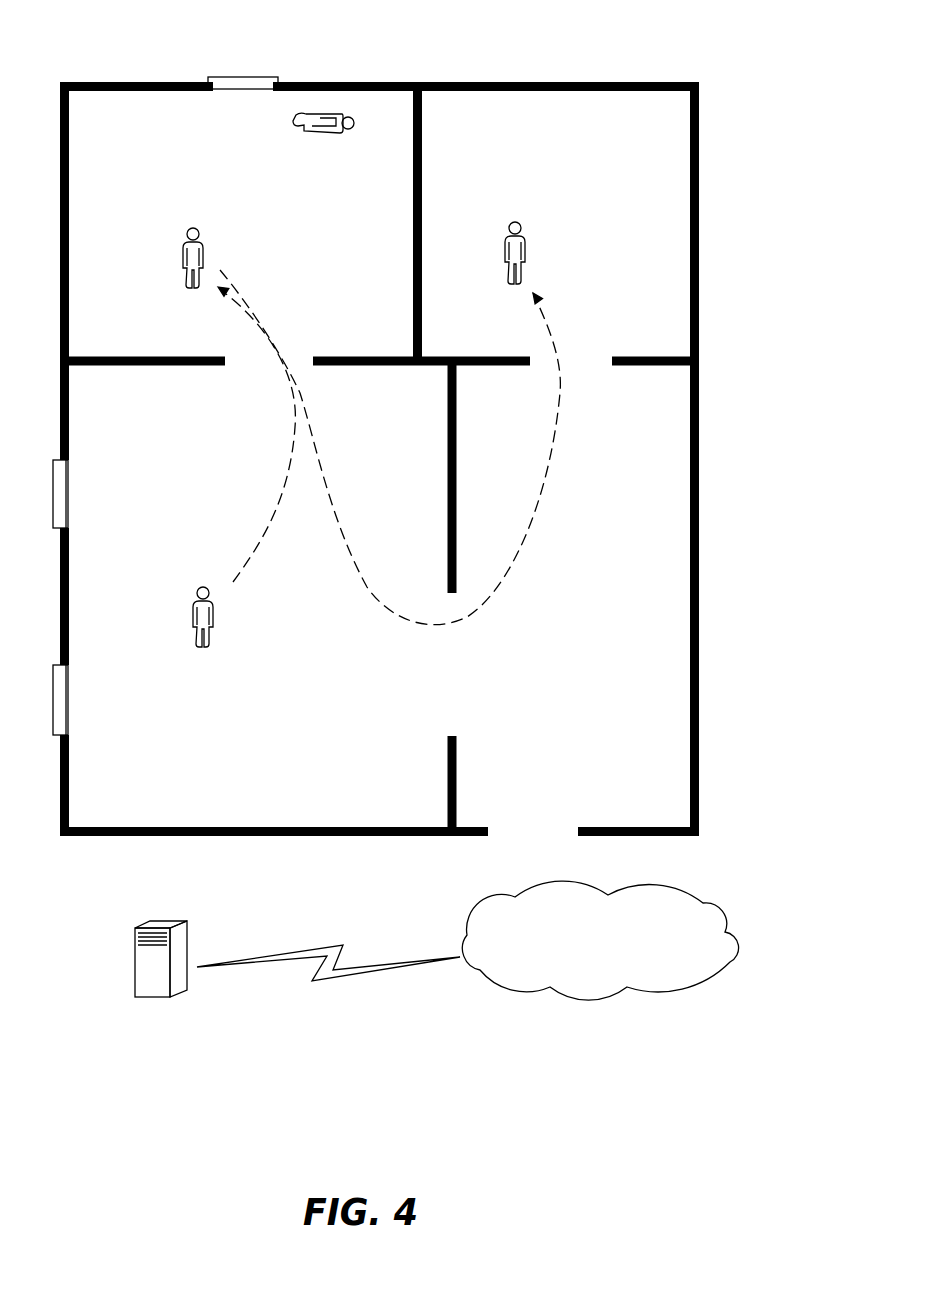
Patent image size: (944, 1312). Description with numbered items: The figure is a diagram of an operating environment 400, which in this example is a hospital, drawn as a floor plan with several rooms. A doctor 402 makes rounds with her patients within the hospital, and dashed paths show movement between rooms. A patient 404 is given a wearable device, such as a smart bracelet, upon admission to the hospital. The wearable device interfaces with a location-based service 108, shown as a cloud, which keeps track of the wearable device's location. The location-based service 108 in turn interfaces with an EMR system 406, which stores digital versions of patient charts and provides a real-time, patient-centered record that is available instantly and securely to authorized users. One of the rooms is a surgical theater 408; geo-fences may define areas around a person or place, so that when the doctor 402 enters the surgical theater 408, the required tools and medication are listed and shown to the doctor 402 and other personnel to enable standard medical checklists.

The operating environment 400 is at (634, 47).
The doctor 402 is at (216, 605).
The patient 404 is at (335, 142).
The EMR system 406 is at (190, 930).
The surgical theater 408 is at (478, 148).
The location-based service 108 is at (710, 903).